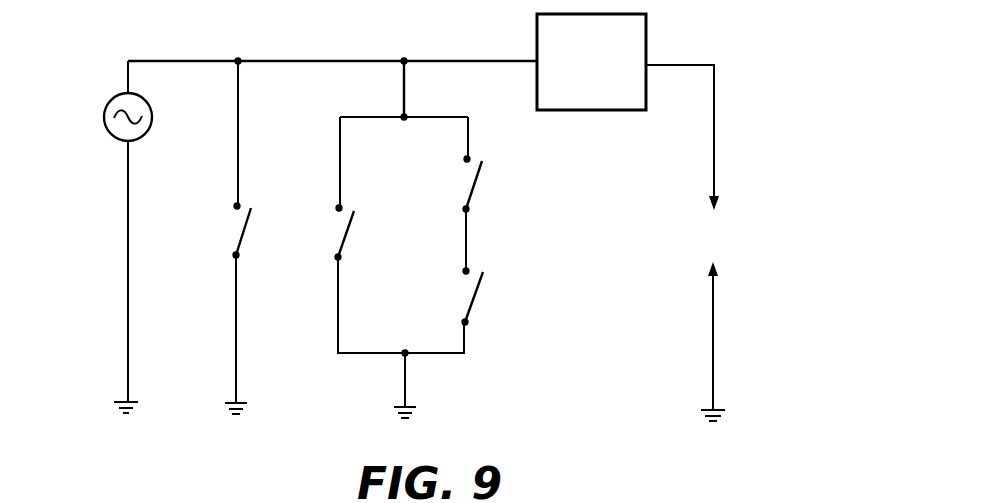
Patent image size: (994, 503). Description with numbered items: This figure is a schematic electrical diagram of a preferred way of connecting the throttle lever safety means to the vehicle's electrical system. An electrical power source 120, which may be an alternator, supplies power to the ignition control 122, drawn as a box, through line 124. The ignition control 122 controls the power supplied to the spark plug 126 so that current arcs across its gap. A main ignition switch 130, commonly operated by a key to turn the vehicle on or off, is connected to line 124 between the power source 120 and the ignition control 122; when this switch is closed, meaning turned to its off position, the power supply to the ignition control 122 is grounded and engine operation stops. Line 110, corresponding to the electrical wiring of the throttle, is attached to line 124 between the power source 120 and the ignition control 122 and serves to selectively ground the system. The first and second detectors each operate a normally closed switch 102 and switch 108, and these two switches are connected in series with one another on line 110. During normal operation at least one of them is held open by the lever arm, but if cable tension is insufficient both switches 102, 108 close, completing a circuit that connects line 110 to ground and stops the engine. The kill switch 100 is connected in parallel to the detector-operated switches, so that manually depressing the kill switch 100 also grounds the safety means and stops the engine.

The kill switch 100 is at (346, 233).
The normally closed switch 102 is at (474, 186).
The normally closed switch 108 is at (476, 298).
The electrical wiring 110 is at (405, 88).
The electrical power source 120 is at (106, 104).
The ignition control 122 is at (640, 15).
The line 124 is at (312, 61).
The spark plug 126 is at (722, 193).
The main ignition switch 130 is at (244, 233).